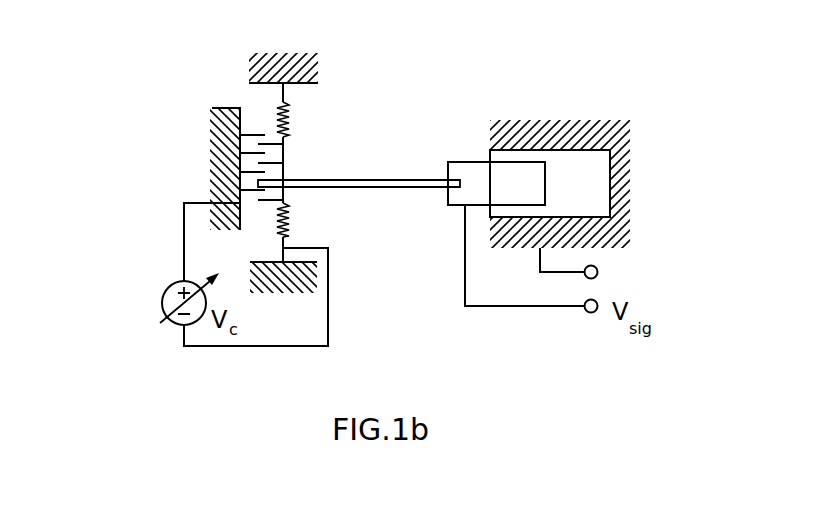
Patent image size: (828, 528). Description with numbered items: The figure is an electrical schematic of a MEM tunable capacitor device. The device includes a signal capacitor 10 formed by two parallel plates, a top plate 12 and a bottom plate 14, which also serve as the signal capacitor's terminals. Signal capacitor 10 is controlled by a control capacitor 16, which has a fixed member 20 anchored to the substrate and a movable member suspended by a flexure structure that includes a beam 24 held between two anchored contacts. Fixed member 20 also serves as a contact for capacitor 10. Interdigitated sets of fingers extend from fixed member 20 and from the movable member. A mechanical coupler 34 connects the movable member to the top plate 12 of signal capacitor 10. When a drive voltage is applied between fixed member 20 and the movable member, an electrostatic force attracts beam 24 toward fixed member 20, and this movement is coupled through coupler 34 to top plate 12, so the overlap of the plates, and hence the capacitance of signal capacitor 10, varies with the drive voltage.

The signal capacitor 10 is at (654, 82).
The top plate 12 is at (458, 200).
The bottom plate 14 is at (597, 168).
The control capacitor 16 is at (188, 130).
The fixed member 20 is at (226, 108).
The beam 24 is at (287, 166).
The mechanical coupler 34 is at (343, 183).